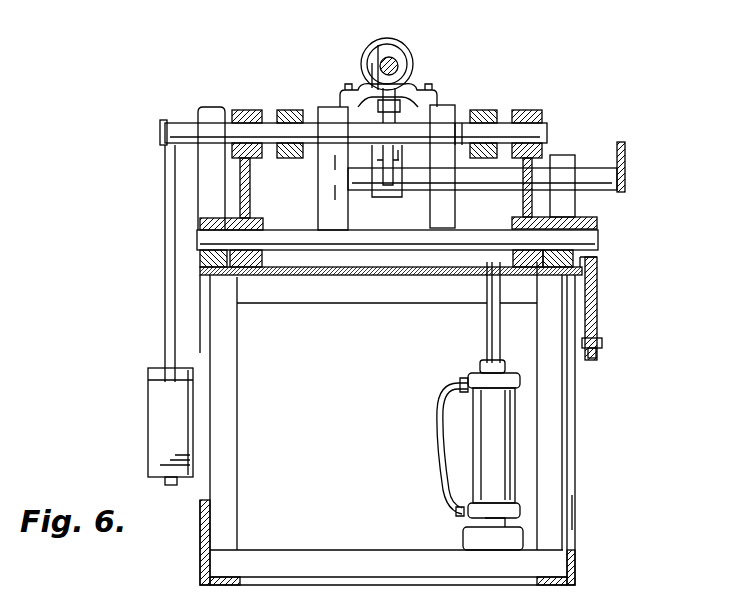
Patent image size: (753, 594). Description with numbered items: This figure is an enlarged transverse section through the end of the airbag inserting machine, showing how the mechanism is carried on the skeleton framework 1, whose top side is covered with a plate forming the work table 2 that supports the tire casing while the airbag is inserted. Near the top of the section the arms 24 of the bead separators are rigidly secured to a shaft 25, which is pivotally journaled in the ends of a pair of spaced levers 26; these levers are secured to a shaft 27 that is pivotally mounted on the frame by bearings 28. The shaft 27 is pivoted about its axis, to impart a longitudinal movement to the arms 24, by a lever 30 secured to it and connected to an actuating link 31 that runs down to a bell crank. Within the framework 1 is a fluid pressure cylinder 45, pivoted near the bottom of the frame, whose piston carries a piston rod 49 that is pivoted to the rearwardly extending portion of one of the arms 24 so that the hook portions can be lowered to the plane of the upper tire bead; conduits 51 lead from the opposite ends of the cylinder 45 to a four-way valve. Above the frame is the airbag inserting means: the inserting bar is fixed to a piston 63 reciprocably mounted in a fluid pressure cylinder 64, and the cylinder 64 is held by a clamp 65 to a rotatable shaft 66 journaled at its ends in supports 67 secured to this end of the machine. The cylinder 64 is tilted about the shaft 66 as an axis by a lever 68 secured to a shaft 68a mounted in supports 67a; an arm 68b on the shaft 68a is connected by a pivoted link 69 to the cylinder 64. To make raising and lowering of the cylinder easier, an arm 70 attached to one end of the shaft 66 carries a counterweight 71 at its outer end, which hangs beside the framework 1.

The skeleton framework 1 is at (572, 513).
The work table 2 is at (280, 272).
The arms 24 is at (282, 111).
The shaft 25 is at (547, 128).
The spaced levers 26 is at (250, 170).
The shaft 27 is at (598, 237).
The bearings 28 is at (200, 262).
The lever 30 is at (598, 306).
The actuating link 31 is at (600, 352).
The fluid pressure cylinder 45 is at (510, 430).
The piston rod 49 is at (497, 350).
The conduits 51 is at (438, 483).
The piston 63 is at (366, 62).
The fluid pressure cylinder 64 is at (412, 58).
The clamp 65 is at (445, 106).
The rotatable shaft 66 is at (162, 130).
The supports 67 is at (210, 108).
The supports 67a is at (325, 205).
The lever 68 is at (625, 148).
The shaft 68a is at (402, 152).
The arm 68b is at (375, 197).
The pivoted link 69 is at (352, 103).
The arm 70 is at (165, 225).
The counterweight 71 is at (160, 412).